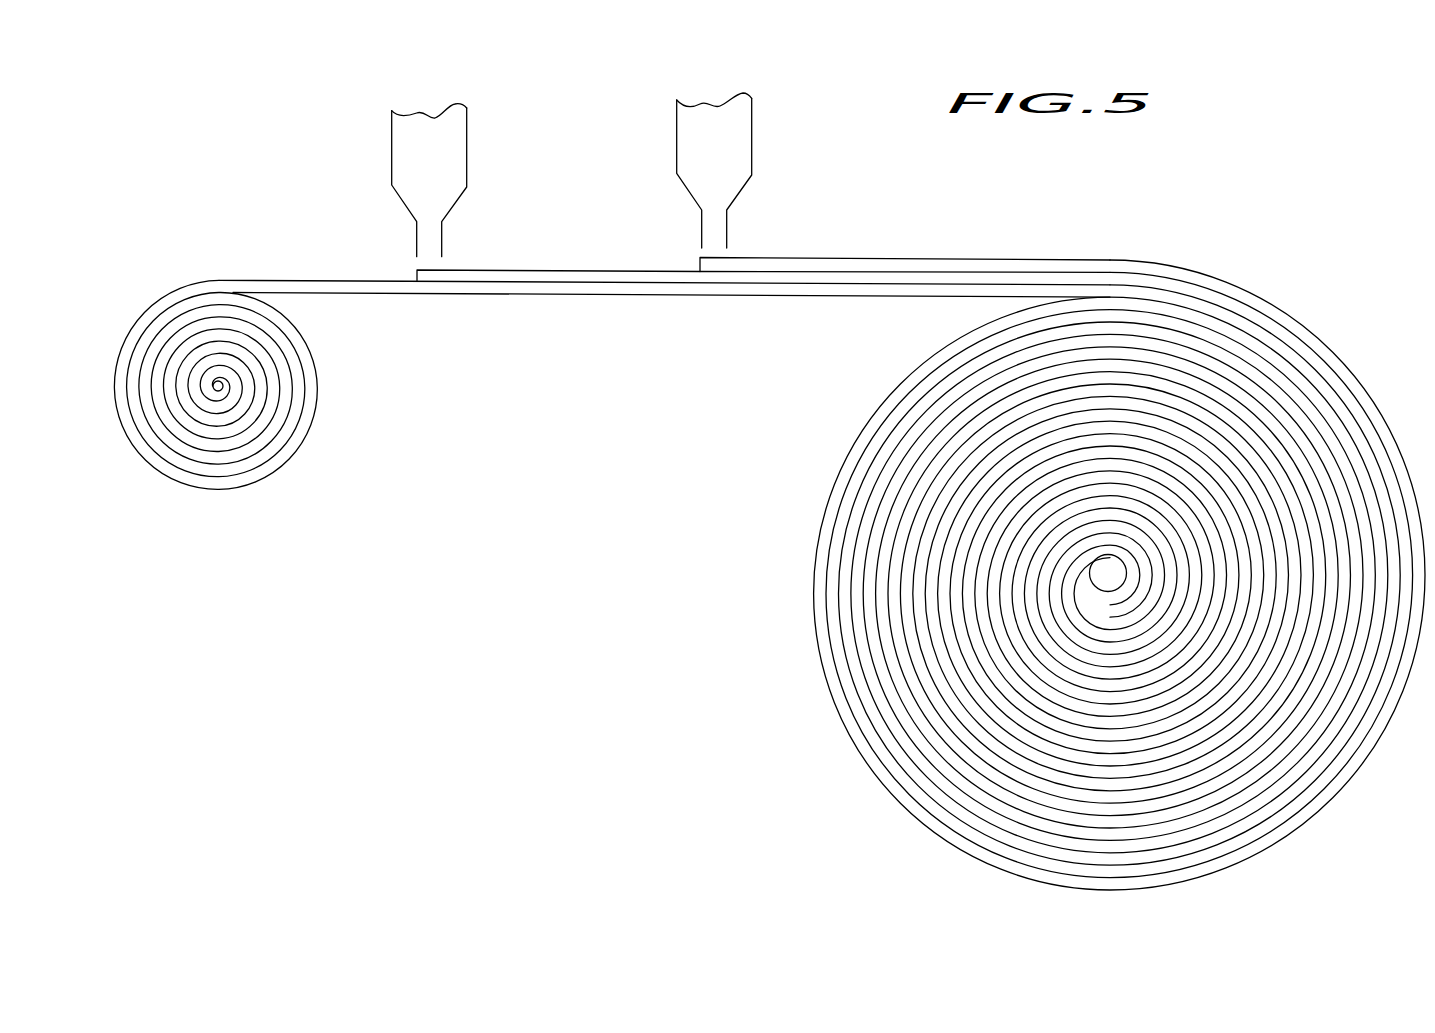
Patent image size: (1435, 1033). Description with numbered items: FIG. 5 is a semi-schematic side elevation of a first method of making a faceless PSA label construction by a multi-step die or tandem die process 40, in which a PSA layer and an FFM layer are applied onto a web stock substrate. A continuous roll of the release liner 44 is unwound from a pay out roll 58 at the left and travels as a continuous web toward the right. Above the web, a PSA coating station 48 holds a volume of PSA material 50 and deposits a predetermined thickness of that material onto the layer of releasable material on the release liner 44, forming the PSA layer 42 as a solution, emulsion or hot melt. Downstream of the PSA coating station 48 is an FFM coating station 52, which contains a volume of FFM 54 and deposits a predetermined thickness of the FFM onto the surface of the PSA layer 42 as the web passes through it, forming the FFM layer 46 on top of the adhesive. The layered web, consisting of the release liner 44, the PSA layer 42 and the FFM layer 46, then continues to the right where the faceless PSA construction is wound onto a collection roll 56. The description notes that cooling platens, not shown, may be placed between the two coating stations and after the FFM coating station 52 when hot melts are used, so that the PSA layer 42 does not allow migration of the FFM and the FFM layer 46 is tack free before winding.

The multi-step die or tandem die process 40 is at (653, 92).
The PSA layer 42 is at (588, 268).
The release liner 44 is at (667, 291).
The FFM layer 46 is at (903, 268).
The PSA coating station 48 is at (467, 187).
The PSA material 50 is at (437, 150).
The FFM coating station 52 is at (752, 175).
The FFM 54 is at (727, 162).
The collection roll 56 is at (852, 624).
The pay out roll 58 is at (257, 451).